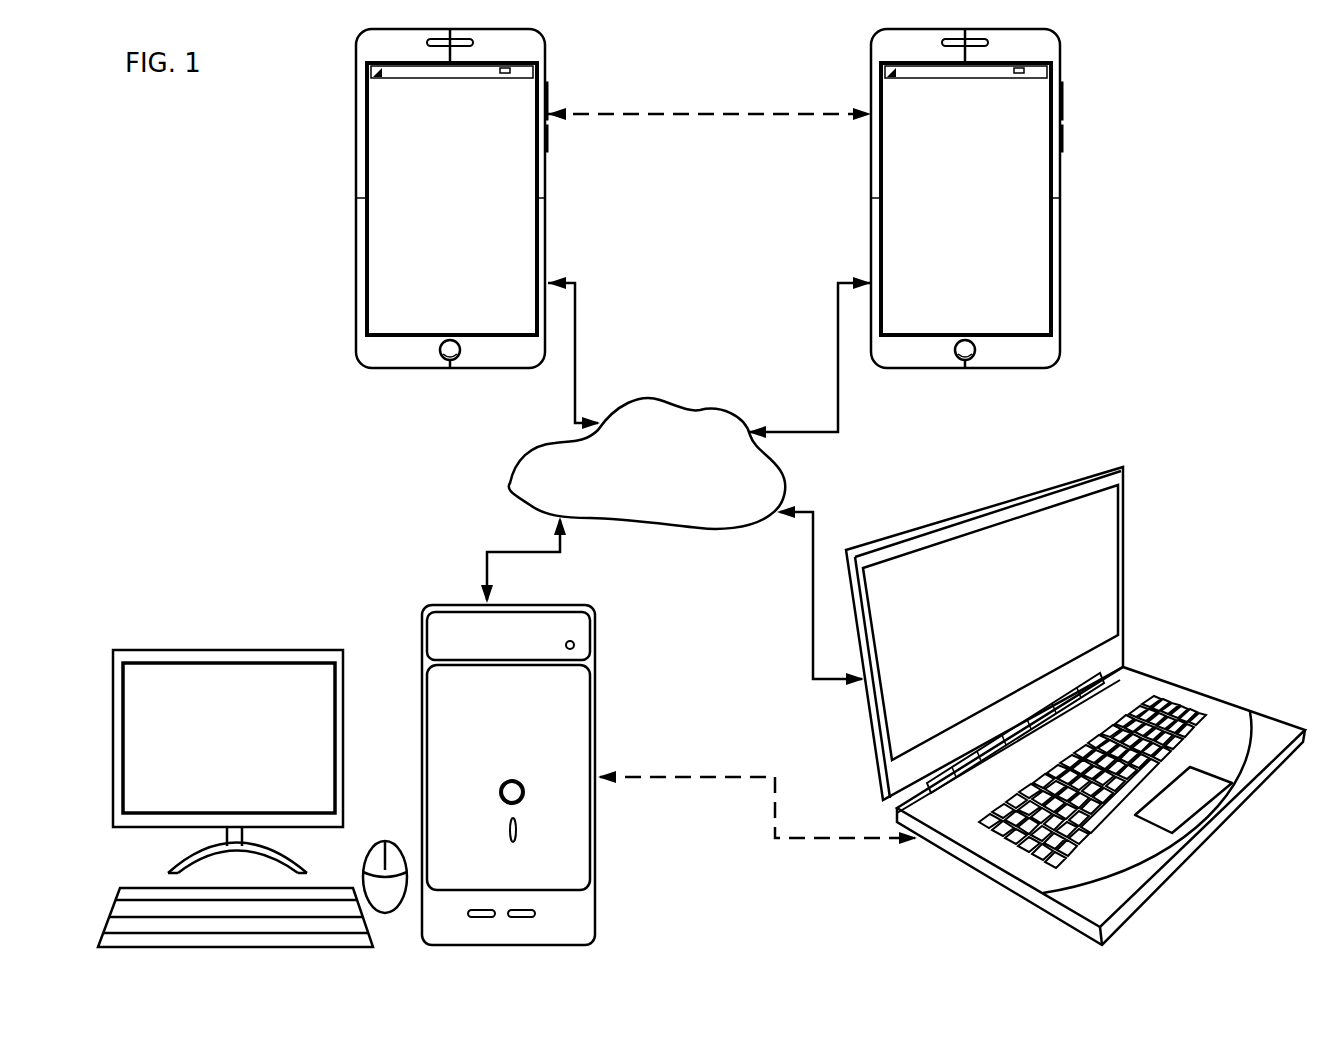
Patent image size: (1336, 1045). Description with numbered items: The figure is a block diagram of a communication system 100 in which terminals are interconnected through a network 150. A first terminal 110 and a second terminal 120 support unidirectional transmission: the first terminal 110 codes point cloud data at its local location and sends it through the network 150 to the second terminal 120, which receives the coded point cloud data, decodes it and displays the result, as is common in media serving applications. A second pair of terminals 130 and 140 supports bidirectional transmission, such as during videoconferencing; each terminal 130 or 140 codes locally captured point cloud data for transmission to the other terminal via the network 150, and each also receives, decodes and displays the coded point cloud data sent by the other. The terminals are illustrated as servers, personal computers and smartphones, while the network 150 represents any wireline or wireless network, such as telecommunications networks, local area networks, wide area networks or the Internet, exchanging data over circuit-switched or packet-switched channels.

The communication system 100 is at (258, 135).
The first terminal 110 is at (1124, 548).
The second terminal 120 is at (595, 897).
The terminal 130 is at (356, 135).
The terminal 140 is at (871, 135).
The network 150 is at (632, 487).